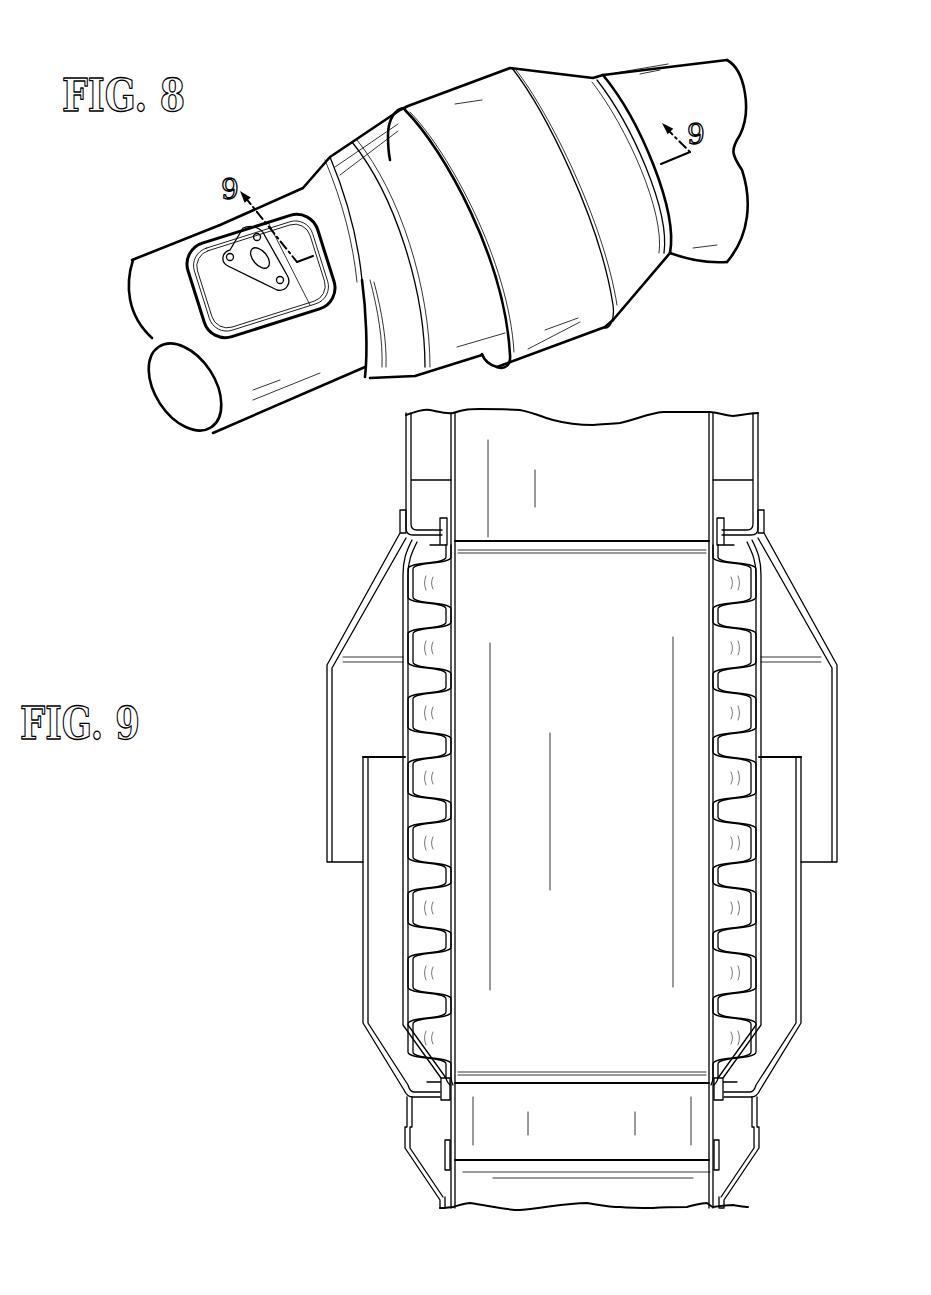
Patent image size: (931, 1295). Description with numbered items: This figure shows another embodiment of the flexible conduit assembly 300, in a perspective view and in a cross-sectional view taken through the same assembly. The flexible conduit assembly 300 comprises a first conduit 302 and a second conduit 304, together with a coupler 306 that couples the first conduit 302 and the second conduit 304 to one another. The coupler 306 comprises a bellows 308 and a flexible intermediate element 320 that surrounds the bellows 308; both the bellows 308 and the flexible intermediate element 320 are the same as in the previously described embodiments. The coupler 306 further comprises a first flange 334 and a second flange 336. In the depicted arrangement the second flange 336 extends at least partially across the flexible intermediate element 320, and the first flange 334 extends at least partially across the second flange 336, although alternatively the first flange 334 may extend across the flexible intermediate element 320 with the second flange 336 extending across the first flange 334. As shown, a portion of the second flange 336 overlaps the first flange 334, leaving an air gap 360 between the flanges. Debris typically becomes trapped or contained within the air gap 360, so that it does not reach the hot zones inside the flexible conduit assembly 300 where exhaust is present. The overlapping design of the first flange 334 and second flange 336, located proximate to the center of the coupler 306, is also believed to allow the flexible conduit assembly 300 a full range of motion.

In FIG. 8, the flexible conduit assembly 300 is at (641, 41).
In FIG. 9, the flexible conduit assembly 300 is at (745, 380).
In FIG. 8, the first conduit 302 is at (670, 83).
In FIG. 9, the first conduit 302 is at (598, 446).
In FIG. 8, the second conduit 304 is at (163, 277).
In FIG. 9, the second conduit 304 is at (636, 1175).
In FIG. 8, the coupler 306 is at (540, 56).
In FIG. 9, the coupler 306 is at (843, 806).
In FIG. 9, the bellows 308 is at (445, 648).
In FIG. 9, the flexible intermediate element 320 is at (403, 603).
In FIG. 8, the first flange 334 is at (530, 104).
In FIG. 9, the first flange 334 is at (340, 691).
In FIG. 8, the second flange 336 is at (387, 140).
In FIG. 9, the second flange 336 is at (360, 893).
In FIG. 9, the air gap 360 is at (356, 793).